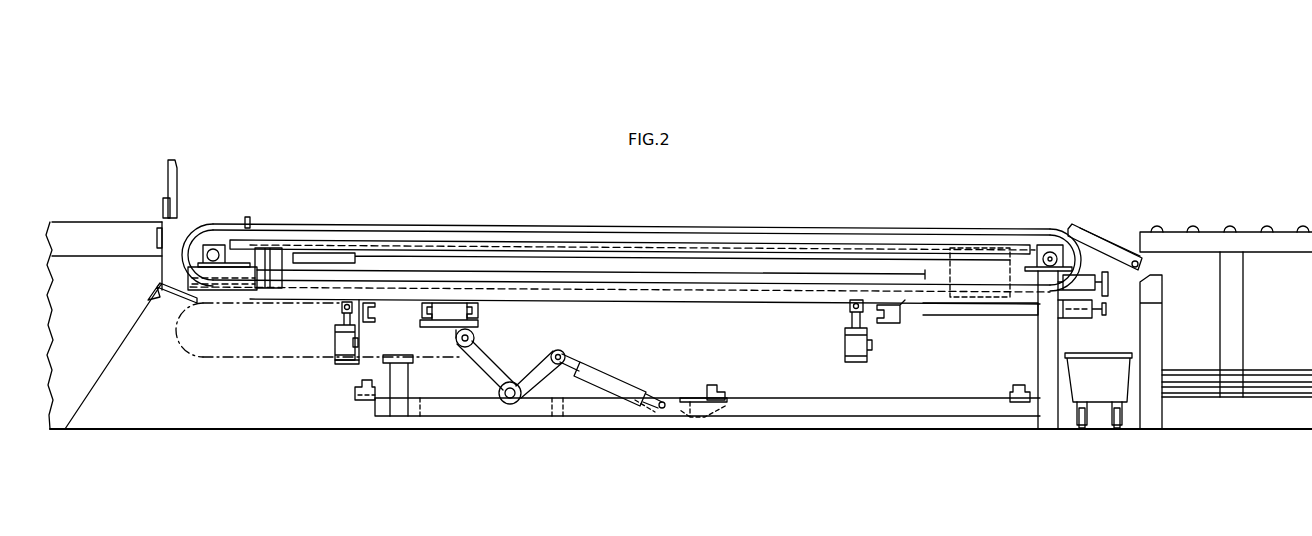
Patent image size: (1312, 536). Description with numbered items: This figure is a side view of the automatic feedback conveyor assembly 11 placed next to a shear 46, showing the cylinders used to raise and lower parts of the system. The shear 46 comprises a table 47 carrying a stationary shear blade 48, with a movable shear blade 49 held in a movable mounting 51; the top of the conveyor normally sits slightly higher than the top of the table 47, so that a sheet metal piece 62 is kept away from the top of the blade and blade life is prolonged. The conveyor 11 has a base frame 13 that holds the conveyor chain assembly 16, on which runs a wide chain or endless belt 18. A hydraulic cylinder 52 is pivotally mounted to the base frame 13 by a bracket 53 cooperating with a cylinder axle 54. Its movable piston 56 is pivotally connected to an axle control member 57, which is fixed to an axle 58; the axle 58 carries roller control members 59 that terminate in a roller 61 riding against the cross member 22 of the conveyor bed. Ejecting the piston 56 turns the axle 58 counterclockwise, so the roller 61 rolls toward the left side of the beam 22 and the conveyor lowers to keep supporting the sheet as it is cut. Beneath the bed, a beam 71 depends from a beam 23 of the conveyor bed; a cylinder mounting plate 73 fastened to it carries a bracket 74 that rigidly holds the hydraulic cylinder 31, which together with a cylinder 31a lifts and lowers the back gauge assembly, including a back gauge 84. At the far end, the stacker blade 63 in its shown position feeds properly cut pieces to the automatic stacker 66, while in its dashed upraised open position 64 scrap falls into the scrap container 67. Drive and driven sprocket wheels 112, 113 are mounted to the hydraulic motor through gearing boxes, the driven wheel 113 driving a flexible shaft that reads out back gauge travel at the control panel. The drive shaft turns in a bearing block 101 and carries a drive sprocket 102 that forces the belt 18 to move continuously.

The conveyor assembly 11 is at (942, 178).
The frame 13 is at (882, 434).
The conveyor chain assembly 16 is at (742, 340).
The wide chain 18 is at (798, 226).
The cross member 22 is at (482, 312).
The beam 23 is at (618, 303).
The hydraulic cylinder 31 is at (334, 340).
The cylinder 31a is at (845, 347).
The shear 46 is at (136, 178).
The table 47 is at (95, 250).
The stationary shear blade 48 is at (155, 238).
The movable shear blade 49 is at (160, 205).
The movable mounting 51 is at (180, 178).
The hydraulic cylinder 52 is at (632, 388).
The bracket 53 is at (666, 410).
The cylinder axle 54 is at (668, 400).
The movable piston 56 is at (584, 362).
The axle control member 57 is at (545, 352).
The axle 58 is at (514, 402).
The roller control member 59 is at (470, 364).
The roller 61 is at (475, 339).
The sheet metal piece 62 is at (222, 224).
The stacker blade 63 is at (1085, 230).
The open position 64 is at (1118, 240).
The automatic stacker 66 is at (1202, 434).
The scrap container 67 is at (1097, 392).
The beam 71 is at (370, 312).
The cylinder mounting plate 73 is at (362, 347).
The bracket 74 is at (345, 362).
The back gauge 84 is at (255, 223).
The bearing block 101 is at (1043, 243).
The drive sprocket 102 is at (1057, 242).
The drive sprocket wheel 112 is at (1110, 285).
The driven sprocket wheel 113 is at (1105, 318).